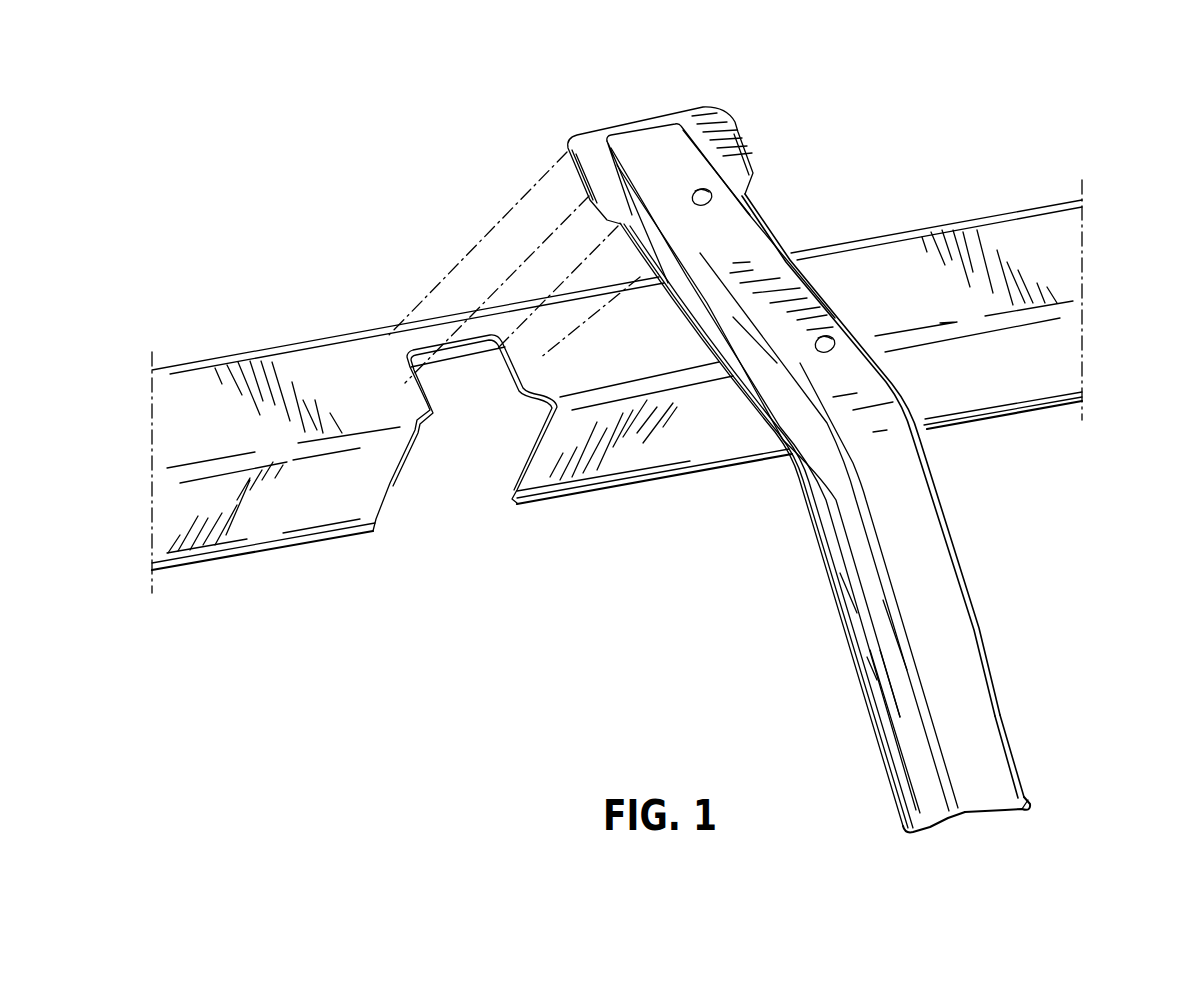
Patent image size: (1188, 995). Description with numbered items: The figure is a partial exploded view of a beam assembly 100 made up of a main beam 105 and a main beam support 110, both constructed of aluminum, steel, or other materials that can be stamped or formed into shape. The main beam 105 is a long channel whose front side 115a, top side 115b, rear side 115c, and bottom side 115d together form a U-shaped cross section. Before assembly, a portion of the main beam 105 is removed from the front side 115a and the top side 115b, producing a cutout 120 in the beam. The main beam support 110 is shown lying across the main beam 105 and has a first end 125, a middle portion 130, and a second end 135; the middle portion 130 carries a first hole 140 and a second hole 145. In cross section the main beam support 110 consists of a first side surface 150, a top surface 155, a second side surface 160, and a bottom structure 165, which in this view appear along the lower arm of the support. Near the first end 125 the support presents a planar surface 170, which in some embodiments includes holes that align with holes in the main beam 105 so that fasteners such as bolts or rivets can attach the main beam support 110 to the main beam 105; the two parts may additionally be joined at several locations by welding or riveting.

The beam assembly 100 is at (1018, 98).
The main beam 105 is at (888, 282).
The main beam support 110 is at (840, 495).
The front side 115a is at (1050, 354).
The top side 115b is at (1057, 261).
The rear side 115c is at (984, 217).
The bottom side 115d is at (1043, 408).
The cutout 120 is at (450, 450).
The first end 125 is at (665, 138).
The middle portion 130 is at (900, 428).
The second end 135 is at (977, 717).
The first hole 140 is at (702, 192).
The second hole 145 is at (817, 347).
The first side surface 150 is at (930, 810).
The top surface 155 is at (982, 797).
The second side surface 160 is at (1017, 746).
The bottom structure 165 is at (893, 770).
The planar surface 170 is at (592, 138).